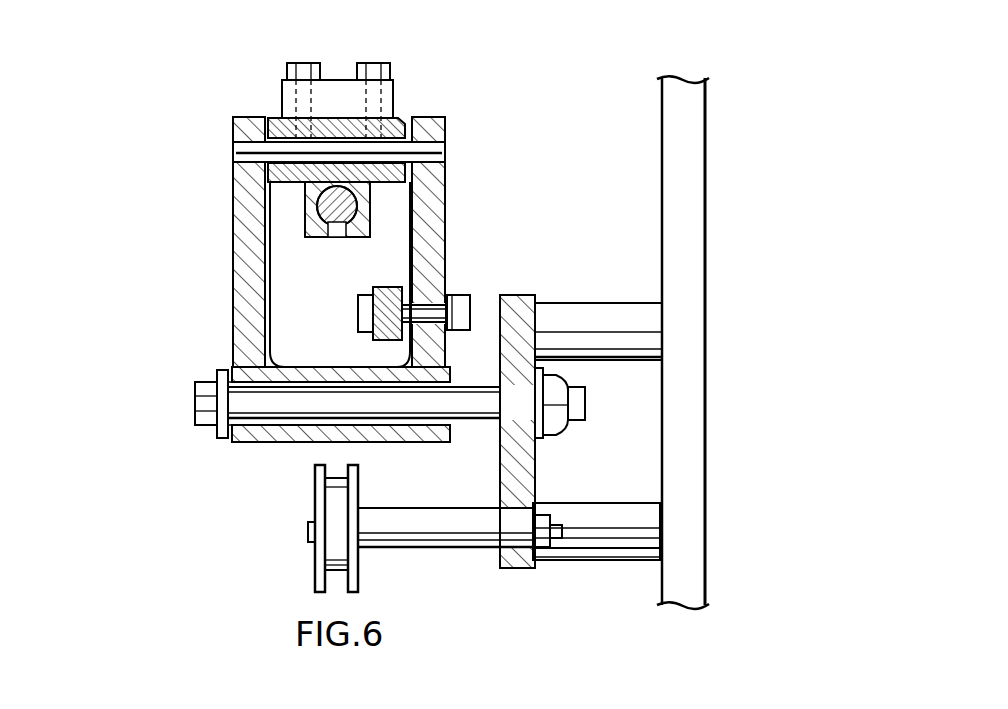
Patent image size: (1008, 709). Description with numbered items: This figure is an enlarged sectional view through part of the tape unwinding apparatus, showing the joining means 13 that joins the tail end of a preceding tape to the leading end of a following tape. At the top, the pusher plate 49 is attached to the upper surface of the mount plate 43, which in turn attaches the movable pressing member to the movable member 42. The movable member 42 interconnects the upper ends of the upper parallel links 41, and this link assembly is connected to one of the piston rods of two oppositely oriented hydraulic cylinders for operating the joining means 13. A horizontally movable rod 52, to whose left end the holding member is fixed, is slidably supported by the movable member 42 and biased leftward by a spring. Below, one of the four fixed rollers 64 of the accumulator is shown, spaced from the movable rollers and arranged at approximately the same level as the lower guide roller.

The joining means 13 is at (205, 329).
The upper parallel links 41 is at (447, 243).
The movable member 42 is at (406, 118).
The mount plate 43 is at (388, 93).
The pusher plate 49 is at (338, 78).
The rod 52 is at (325, 238).
The fixed rollers 64 is at (313, 493).